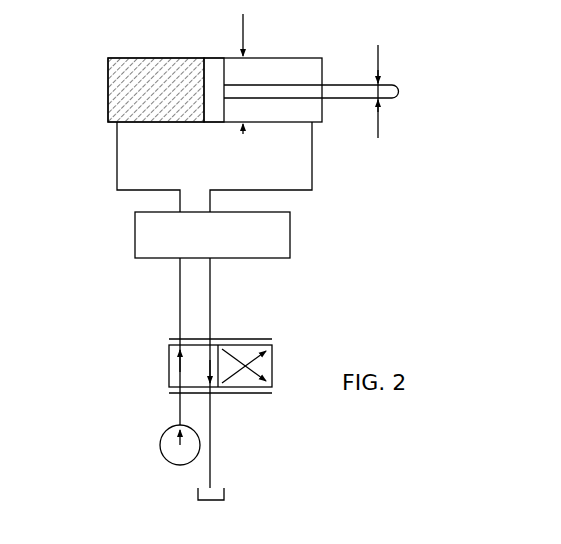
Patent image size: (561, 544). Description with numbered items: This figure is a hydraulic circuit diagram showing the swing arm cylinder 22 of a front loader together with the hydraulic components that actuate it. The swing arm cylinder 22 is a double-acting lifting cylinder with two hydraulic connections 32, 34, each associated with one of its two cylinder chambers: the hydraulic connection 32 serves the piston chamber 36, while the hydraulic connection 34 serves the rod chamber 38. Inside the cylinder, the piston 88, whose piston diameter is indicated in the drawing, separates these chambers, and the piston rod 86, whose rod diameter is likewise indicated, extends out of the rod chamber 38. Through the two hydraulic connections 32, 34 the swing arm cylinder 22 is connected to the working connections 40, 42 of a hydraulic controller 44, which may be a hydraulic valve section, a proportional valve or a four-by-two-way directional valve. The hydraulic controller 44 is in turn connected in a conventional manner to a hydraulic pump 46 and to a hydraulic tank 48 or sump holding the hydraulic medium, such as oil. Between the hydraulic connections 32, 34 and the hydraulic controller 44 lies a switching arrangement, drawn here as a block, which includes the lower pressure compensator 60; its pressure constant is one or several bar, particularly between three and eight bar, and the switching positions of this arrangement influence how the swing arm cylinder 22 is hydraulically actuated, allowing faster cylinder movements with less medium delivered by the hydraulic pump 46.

The swing arm cylinder 22 is at (197, 57).
The hydraulic connection 32 is at (114, 122).
The hydraulic connection 34 is at (310, 125).
The piston chamber 36 is at (162, 82).
The rod chamber 38 is at (300, 66).
The working connection 40 is at (179, 340).
The working connection 42 is at (212, 340).
The hydraulic controller 44 is at (166, 368).
The hydraulic pump 46 is at (170, 464).
The hydraulic tank 48 is at (228, 496).
The lower pressure compensator 60 is at (294, 245).
The piston rod 86 is at (352, 84).
The piston 88 is at (228, 70).